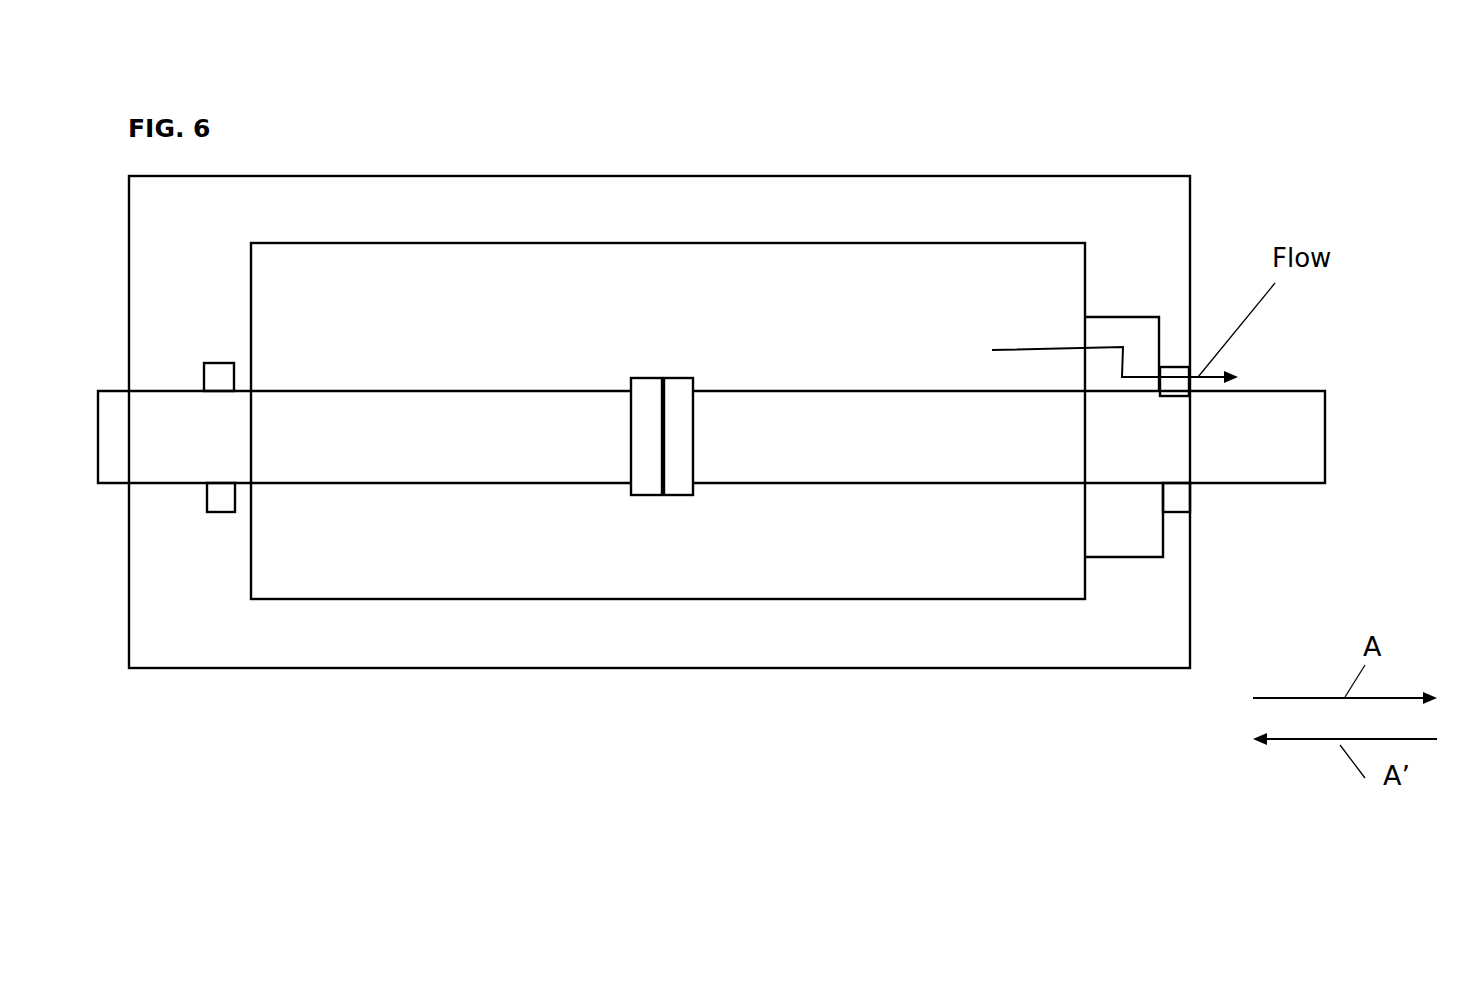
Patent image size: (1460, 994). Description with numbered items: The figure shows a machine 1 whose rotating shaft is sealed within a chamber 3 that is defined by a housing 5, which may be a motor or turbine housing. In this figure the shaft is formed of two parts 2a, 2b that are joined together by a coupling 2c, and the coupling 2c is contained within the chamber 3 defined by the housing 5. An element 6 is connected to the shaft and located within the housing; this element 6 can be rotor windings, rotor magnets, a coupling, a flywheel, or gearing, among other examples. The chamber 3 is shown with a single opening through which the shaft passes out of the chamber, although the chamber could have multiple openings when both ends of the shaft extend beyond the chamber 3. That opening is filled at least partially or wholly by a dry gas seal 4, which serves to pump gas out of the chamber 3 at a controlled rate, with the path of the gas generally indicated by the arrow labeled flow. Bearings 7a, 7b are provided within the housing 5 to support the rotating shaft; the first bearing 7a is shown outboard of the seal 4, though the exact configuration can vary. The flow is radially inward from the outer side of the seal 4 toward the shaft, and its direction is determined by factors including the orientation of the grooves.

The machine 1 is at (402, 125).
The shaft part 2a is at (370, 462).
The shaft part 2b is at (910, 445).
The coupling 2c is at (703, 497).
The chamber 3 is at (897, 283).
The dry gas seal 4 is at (1078, 488).
The housing 5 is at (1010, 208).
The element 6 is at (705, 333).
The first bearing 7a is at (1171, 495).
The bearing 7b is at (220, 513).